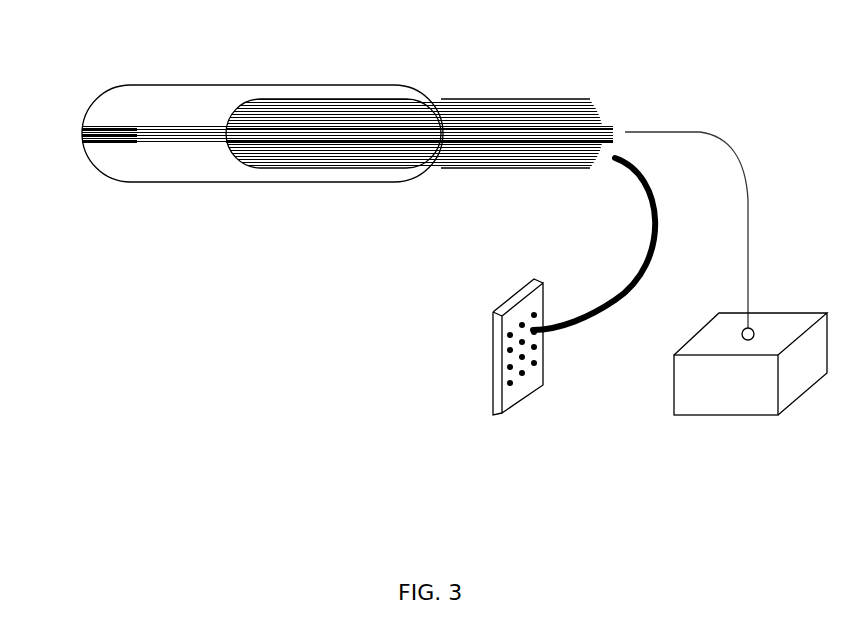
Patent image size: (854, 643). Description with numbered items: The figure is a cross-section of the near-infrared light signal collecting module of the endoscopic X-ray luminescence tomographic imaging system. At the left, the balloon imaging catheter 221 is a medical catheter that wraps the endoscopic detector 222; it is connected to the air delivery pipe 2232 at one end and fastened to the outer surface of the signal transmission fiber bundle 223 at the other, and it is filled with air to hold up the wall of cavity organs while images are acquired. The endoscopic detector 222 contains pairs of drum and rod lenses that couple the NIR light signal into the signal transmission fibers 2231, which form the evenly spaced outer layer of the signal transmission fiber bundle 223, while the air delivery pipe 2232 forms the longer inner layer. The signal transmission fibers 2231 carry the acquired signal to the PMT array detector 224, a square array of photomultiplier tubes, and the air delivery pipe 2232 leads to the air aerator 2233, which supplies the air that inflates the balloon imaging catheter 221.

The balloon imaging catheter 221 is at (118, 87).
The endoscopic detector 222 is at (293, 98).
The signal transmission fibers 2231 is at (393, 108).
The signal transmission fiber bundle 223 is at (502, 98).
The air delivery pipe 2232 is at (103, 132).
The PMT array detector 224 is at (528, 280).
The air aerator 2233 is at (784, 325).